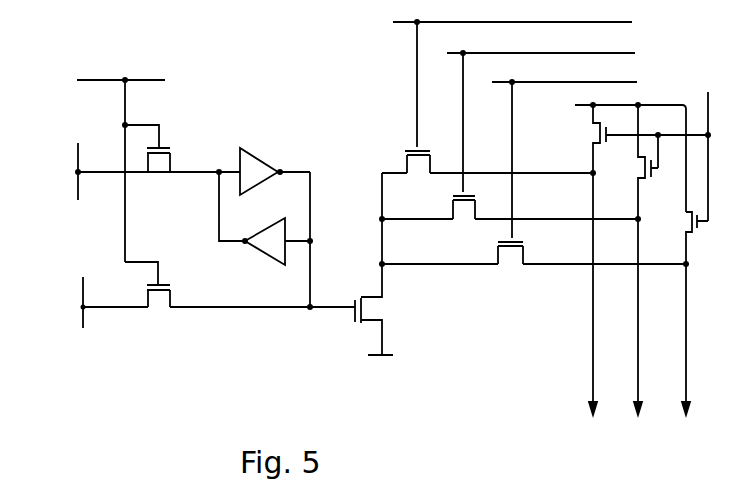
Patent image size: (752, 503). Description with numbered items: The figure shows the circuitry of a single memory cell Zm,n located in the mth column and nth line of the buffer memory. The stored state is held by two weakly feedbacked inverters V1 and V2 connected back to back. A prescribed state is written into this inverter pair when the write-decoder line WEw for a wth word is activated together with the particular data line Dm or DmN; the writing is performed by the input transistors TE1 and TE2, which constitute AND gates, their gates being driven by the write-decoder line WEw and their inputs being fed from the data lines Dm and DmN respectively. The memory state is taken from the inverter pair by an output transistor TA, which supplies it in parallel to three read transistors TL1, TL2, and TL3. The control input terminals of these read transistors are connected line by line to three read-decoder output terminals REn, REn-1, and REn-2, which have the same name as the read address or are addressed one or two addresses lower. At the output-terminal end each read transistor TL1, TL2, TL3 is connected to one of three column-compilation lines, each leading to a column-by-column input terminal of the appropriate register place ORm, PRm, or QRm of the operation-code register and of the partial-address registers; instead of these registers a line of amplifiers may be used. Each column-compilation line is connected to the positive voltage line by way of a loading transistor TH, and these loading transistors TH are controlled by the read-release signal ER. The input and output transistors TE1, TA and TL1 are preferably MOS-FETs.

The write-decoder line WEw is at (99, 80).
The data line Dm is at (76, 176).
The data line DmN is at (83, 309).
The input transistor TE1 is at (151, 164).
The input transistor TE2 is at (151, 300).
The inverter V1 is at (263, 159).
The inverter V2 is at (266, 218).
The memory cell Zm,n is at (372, 195).
The read-decoder output terminal REn is at (417, 62).
The read-decoder output terminal REn-1 is at (463, 53).
The read-decoder output terminal REn-2 is at (512, 82).
The read-release signal ER is at (708, 92).
The read transistor TL1 is at (487, 176).
The read transistor TL2 is at (510, 223).
The read transistor TL3 is at (534, 268).
The output transistor TA is at (386, 264).
The loading transistor TH is at (599, 150).
The register place ORm is at (592, 380).
The register place PRm is at (637, 400).
The register place QRm is at (685, 395).